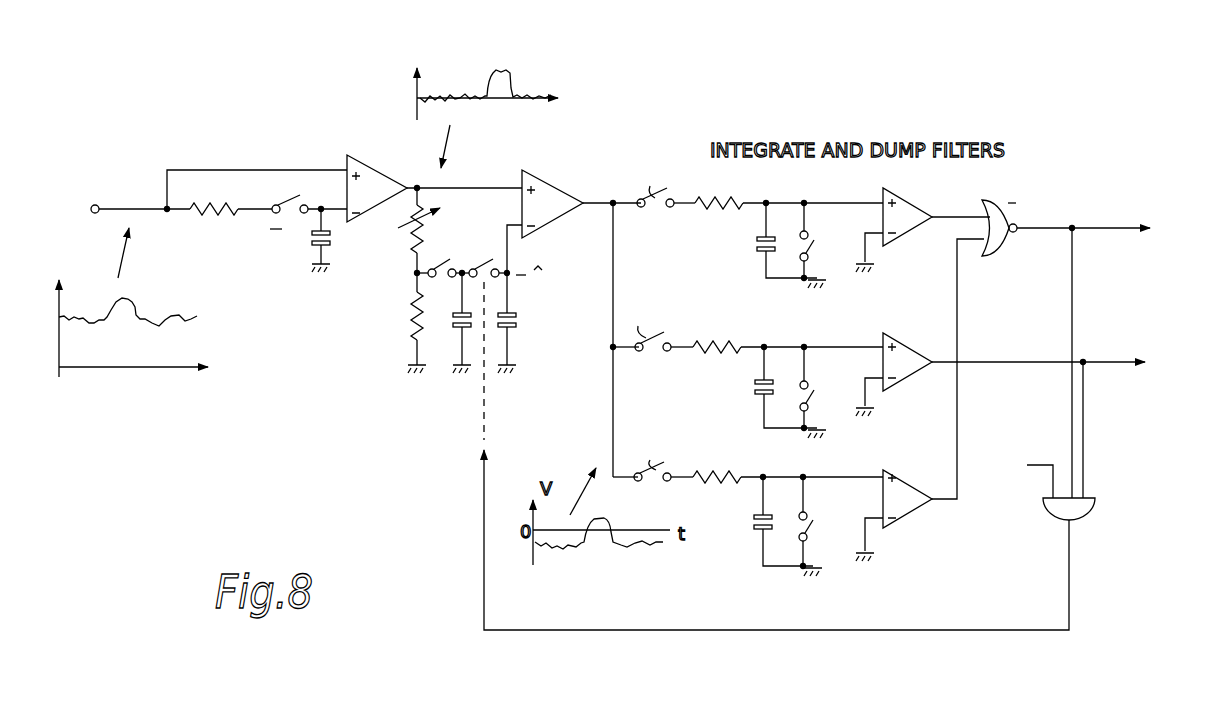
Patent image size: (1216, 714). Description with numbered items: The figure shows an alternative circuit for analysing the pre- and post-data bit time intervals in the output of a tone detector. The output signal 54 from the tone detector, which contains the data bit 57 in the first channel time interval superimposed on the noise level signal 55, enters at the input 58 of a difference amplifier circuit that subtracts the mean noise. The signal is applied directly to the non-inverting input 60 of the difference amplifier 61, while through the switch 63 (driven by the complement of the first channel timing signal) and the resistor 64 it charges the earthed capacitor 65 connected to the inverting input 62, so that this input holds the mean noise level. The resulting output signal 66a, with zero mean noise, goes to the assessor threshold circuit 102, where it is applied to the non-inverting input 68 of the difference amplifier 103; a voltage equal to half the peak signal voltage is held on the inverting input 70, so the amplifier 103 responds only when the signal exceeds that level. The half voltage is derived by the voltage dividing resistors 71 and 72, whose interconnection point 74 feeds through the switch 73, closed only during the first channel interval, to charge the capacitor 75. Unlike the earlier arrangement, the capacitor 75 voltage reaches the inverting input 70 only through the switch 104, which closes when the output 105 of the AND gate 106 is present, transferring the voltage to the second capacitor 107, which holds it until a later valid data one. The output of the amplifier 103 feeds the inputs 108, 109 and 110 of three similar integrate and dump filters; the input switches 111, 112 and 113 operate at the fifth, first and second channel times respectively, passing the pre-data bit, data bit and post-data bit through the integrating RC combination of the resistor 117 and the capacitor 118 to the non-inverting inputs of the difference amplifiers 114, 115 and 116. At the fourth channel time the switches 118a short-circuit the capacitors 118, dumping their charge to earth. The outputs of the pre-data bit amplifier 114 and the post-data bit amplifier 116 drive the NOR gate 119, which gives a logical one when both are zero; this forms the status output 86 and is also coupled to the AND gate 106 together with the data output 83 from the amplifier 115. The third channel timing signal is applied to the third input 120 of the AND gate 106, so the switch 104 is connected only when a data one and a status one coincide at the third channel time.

The output signal 54 is at (159, 337).
The noise level signal 55 is at (176, 322).
The data bit 57 is at (125, 300).
The input 58 is at (98, 205).
The non-inverting input 60 is at (318, 170).
The difference amplifier 61 is at (378, 172).
The inverting input 62 is at (330, 212).
The switch 63 is at (276, 204).
The resistor 64 is at (230, 216).
The capacitor 65 is at (306, 253).
The output signal 66a is at (520, 82).
The non-inverting input 68 is at (499, 188).
The inverting input 70 is at (509, 247).
The voltage dividing resistor 71 is at (416, 251).
The voltage dividing resistor 72 is at (413, 323).
The switch 73 is at (453, 262).
The interconnection point 74 is at (416, 278).
The capacitor 75 is at (461, 329).
The data output 83 is at (1124, 366).
The status output 86 is at (1122, 228).
The assessor threshold circuit 102 is at (407, 230).
The difference amplifier 103 is at (551, 185).
The switch 104 is at (487, 265).
The output 105 is at (1070, 581).
The AND gate 106 is at (1091, 502).
The second capacitor 107 is at (511, 331).
The input 108 is at (624, 326).
The input 109 is at (610, 345).
The input 110 is at (621, 472).
The input switch 111 is at (676, 199).
The input switch 112 is at (676, 338).
The input switch 113 is at (669, 471).
The pre-data bit amplifier 114 is at (914, 205).
The data bit amplifier 115 is at (908, 352).
The post-data bit amplifier 116 is at (908, 488).
The resistor 117 is at (738, 200).
The capacitor 118 is at (757, 238).
The switch 118a is at (810, 235).
The NOR gate 119 is at (994, 207).
The third input 120 is at (1052, 485).